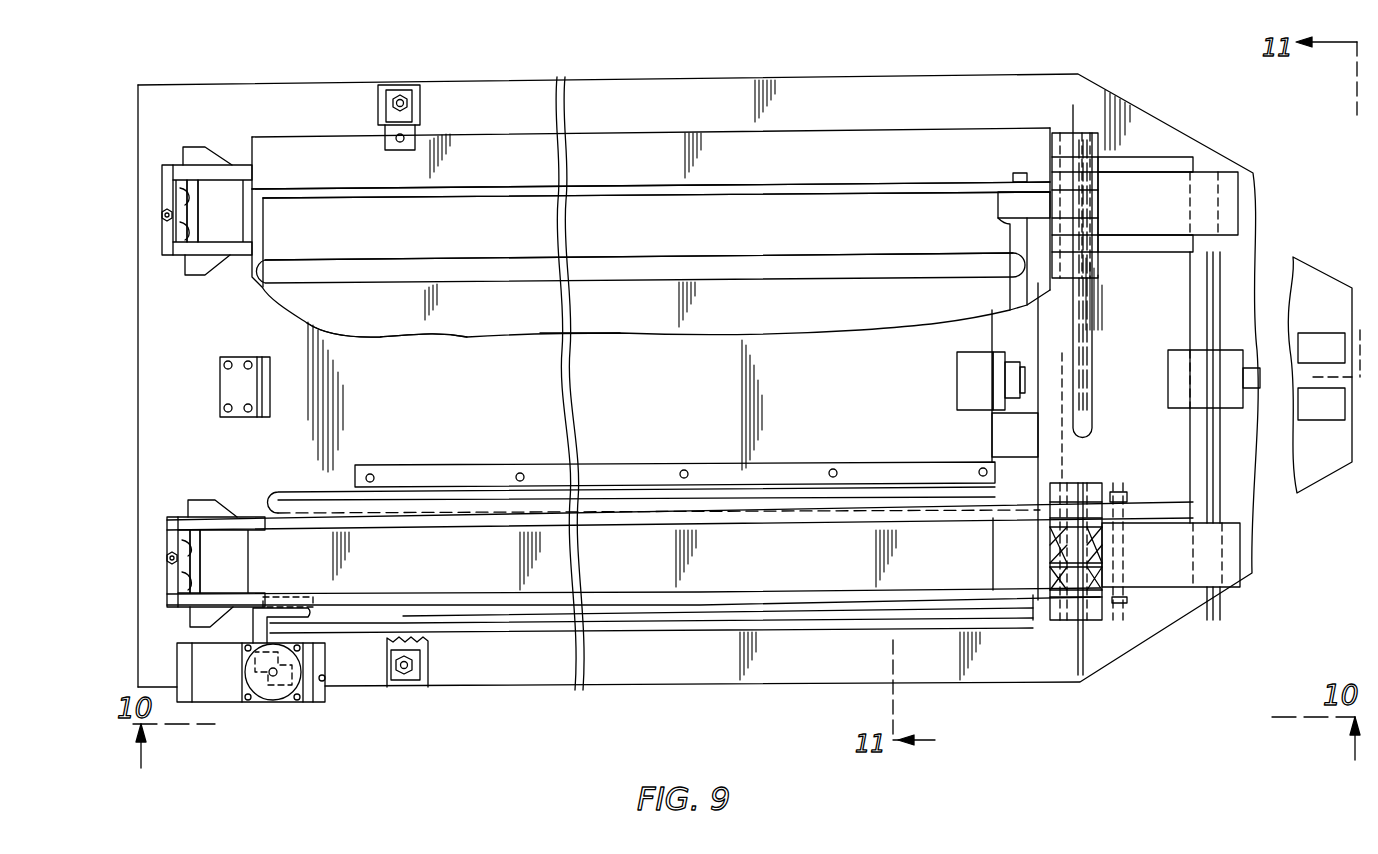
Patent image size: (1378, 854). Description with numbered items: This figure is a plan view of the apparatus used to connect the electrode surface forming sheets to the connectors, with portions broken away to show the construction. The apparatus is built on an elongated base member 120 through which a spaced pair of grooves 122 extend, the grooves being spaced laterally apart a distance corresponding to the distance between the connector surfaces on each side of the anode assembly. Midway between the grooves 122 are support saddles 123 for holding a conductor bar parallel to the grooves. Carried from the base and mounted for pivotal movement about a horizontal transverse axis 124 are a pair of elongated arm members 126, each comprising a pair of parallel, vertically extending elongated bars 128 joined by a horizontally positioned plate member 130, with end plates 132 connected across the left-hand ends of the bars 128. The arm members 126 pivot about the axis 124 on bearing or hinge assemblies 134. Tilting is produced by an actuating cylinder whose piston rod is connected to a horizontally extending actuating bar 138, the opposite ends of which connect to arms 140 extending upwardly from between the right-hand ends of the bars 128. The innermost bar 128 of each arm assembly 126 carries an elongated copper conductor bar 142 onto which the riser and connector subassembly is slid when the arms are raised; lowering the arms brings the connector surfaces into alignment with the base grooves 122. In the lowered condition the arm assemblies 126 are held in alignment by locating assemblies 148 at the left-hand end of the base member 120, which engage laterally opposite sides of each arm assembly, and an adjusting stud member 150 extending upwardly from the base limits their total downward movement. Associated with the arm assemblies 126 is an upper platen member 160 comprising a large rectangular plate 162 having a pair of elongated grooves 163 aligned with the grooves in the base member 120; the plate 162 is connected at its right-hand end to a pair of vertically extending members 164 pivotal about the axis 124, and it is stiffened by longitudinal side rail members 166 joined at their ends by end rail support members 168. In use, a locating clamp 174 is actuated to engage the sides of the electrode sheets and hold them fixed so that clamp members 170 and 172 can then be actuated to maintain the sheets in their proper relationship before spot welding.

The base member 120 is at (580, 690).
The grooves 122 is at (297, 495).
The support saddles 123 is at (238, 428).
The transverse axis 124 is at (1088, 440).
The arm members 126 is at (255, 302).
The elongated bars 128 is at (210, 170).
The plate member 130 is at (680, 366).
The end plates 132 is at (183, 200).
The hinge assemblies 134 is at (1110, 148).
The actuating bar 138 is at (1195, 296).
The arms 140 is at (1230, 200).
The conductor bar 142 is at (338, 497).
The locating assemblies 148 is at (150, 243).
The adjusting stud member 150 is at (183, 225).
The upper platen member 160 is at (452, 335).
The rectangular plate 162 is at (583, 330).
The grooves 163 is at (430, 264).
The vertically extending members 164 is at (996, 222).
The side rail members 166 is at (730, 193).
The end rail support members 168 is at (262, 253).
The clamp member 170 is at (432, 113).
The clamp member 172 is at (396, 695).
The locating clamp 174 is at (292, 714).